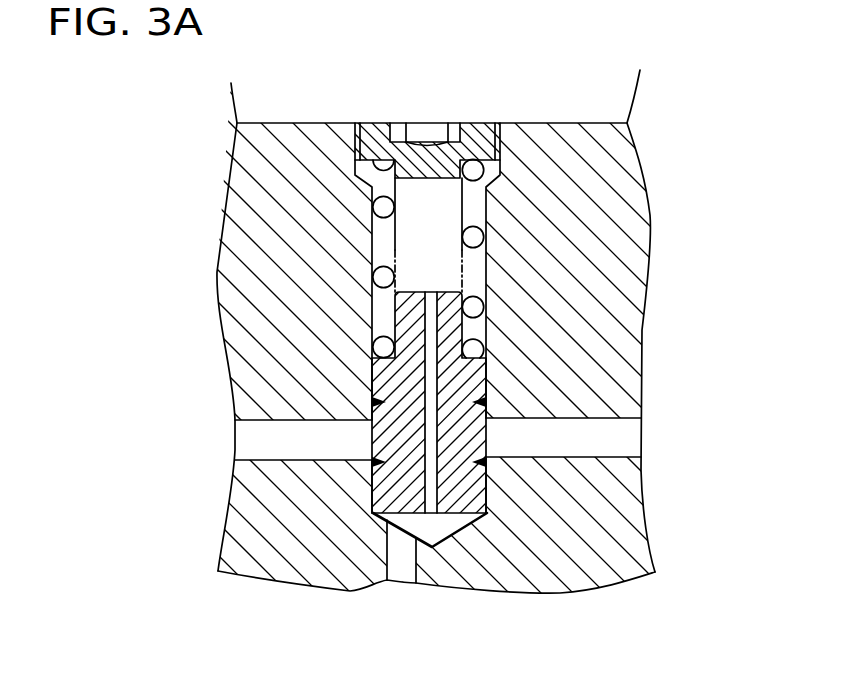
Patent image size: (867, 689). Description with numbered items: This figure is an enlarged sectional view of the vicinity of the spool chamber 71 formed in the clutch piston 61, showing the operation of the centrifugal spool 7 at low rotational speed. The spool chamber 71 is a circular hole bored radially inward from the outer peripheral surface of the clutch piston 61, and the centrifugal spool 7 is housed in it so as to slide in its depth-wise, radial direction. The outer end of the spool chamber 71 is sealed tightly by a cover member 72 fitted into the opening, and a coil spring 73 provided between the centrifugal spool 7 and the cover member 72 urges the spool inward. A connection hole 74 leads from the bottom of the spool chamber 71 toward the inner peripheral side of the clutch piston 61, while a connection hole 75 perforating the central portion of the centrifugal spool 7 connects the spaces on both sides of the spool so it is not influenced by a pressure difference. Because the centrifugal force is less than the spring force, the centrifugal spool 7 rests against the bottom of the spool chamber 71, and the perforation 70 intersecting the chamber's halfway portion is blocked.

The clutch piston 61 is at (243, 262).
The spool chamber 71 is at (487, 195).
The cover member 72 is at (378, 140).
The coil spring 73 is at (383, 207).
The centrifugal spool 7 is at (465, 377).
The connection hole 75 is at (439, 402).
The perforation 70 is at (275, 421).
The connection hole 74 is at (383, 559).